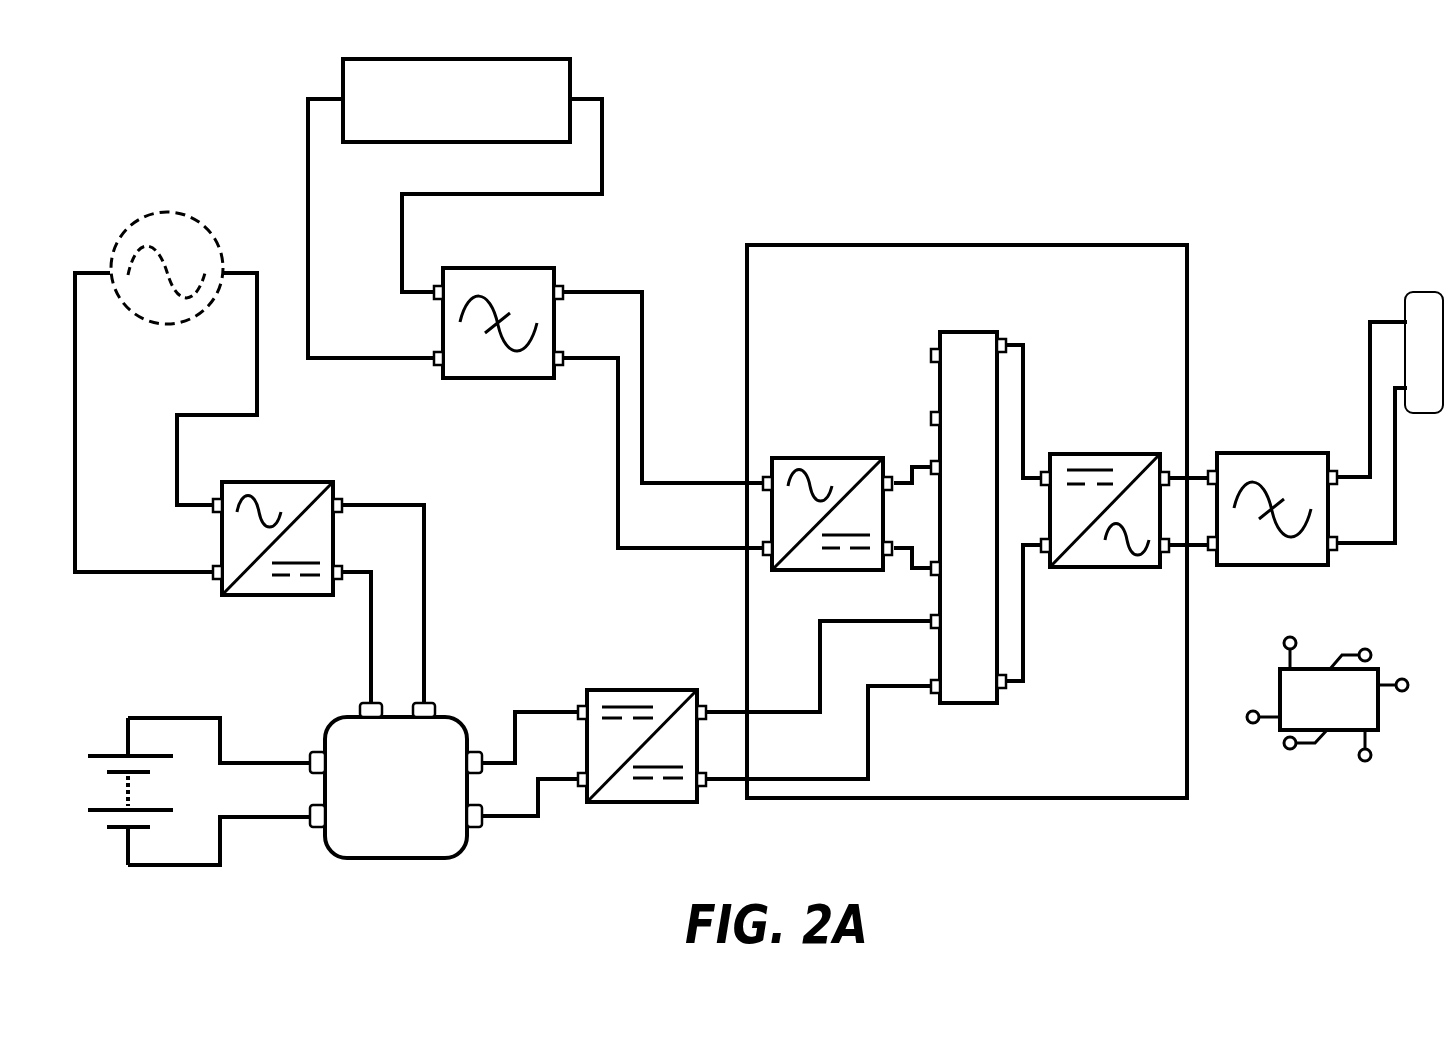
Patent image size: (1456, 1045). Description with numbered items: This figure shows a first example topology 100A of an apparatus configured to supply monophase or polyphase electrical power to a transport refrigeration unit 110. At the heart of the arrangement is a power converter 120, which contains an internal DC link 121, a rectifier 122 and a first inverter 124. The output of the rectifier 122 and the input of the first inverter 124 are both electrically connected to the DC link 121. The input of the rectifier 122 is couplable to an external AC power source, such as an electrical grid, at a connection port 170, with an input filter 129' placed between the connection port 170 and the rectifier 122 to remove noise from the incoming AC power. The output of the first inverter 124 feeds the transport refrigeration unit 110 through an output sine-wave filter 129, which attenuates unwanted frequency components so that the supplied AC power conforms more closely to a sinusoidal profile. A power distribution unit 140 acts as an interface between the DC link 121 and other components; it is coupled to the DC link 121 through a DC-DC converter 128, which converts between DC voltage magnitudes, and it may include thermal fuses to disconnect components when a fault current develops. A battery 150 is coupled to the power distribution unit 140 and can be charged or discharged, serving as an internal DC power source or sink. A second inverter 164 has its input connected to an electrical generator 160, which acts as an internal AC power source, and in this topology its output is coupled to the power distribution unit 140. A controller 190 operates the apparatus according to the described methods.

The first example topology 100A is at (1074, 125).
The transport refrigeration unit 110 is at (343, 87).
The power converter 120 is at (967, 521).
The DC link 121 is at (968, 517).
The rectifier 122 is at (1083, 568).
The first inverter 124 is at (793, 571).
The DC-DC converter 128 is at (617, 802).
The output sine-wave filter 129 is at (508, 297).
The input filter 129' is at (1275, 481).
The power distribution unit 140 is at (396, 780).
The battery 150 is at (103, 755).
The electrical generator 160 is at (167, 214).
The second inverter 164 is at (295, 482).
The connection port 170 is at (1422, 312).
The controller 190 is at (1327, 699).